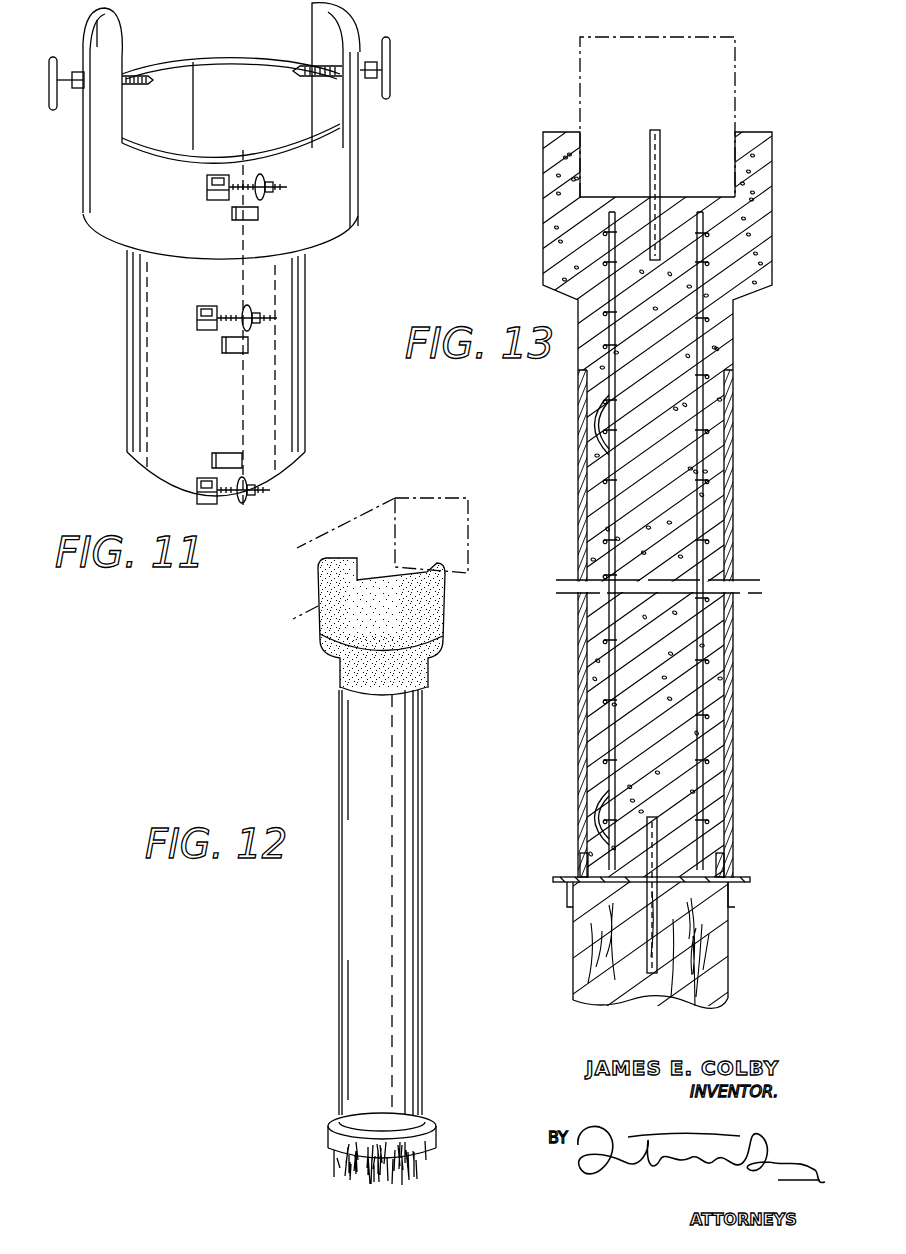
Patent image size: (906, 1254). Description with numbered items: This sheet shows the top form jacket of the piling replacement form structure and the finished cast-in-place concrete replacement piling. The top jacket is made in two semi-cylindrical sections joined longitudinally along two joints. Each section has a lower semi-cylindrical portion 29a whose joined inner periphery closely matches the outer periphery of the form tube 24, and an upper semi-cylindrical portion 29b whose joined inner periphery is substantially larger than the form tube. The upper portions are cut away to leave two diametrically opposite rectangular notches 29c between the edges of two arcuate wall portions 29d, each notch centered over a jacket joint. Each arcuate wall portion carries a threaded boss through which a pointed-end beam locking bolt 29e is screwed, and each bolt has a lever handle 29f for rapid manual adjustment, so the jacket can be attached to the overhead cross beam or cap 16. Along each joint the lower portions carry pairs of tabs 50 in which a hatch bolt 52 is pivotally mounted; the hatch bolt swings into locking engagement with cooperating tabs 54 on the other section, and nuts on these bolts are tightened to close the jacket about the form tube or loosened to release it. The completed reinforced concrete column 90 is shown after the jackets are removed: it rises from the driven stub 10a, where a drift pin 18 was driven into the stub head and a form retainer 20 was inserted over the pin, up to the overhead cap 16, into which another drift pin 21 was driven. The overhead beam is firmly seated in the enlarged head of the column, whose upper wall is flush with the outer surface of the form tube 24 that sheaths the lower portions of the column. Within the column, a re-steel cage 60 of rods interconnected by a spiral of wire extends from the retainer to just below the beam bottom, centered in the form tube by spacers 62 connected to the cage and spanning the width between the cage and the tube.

In FIG. 12, the driven stub 10a is at (358, 1168).
In FIG. 13, the driven stub 10a is at (720, 935).
In FIG. 12, the overhead cross beam or cap 16 is at (418, 498).
In FIG. 13, the overhead cross beam or cap 16 is at (735, 63).
In FIG. 13, the drift pin 18 is at (658, 855).
In FIG. 12, the form retainer 20 is at (330, 1125).
In FIG. 13, the form retainer 20 is at (563, 877).
In FIG. 13, the drift pin 21 is at (662, 172).
In FIG. 12, the tubular concrete form tube 24 is at (358, 733).
In FIG. 13, the tubular concrete form tube 24 is at (582, 455).
In FIG. 11, the lower semi-cylindrical portion 29a is at (160, 375).
In FIG. 11, the upper semi-cylindrical portion 29b is at (122, 225).
In FIG. 11, the rectangular notch 29c is at (227, 58).
In FIG. 11, the arcuate wall portion 29d is at (102, 12).
In FIG. 11, the pointed-end beam locking bolt 29e is at (140, 88).
In FIG. 11, the lever handle 29f is at (52, 112).
In FIG. 11, the tabs 50 is at (208, 182).
In FIG. 11, the hatch bolt 52 is at (258, 208).
In FIG. 11, the cooperating tabs 54 is at (266, 176).
In FIG. 13, the re-steel cage 60 is at (717, 403).
In FIG. 13, the spacers 62 is at (598, 412).
In FIG. 12, the concrete column 90 is at (318, 630).
In FIG. 13, the concrete column 90 is at (548, 222).